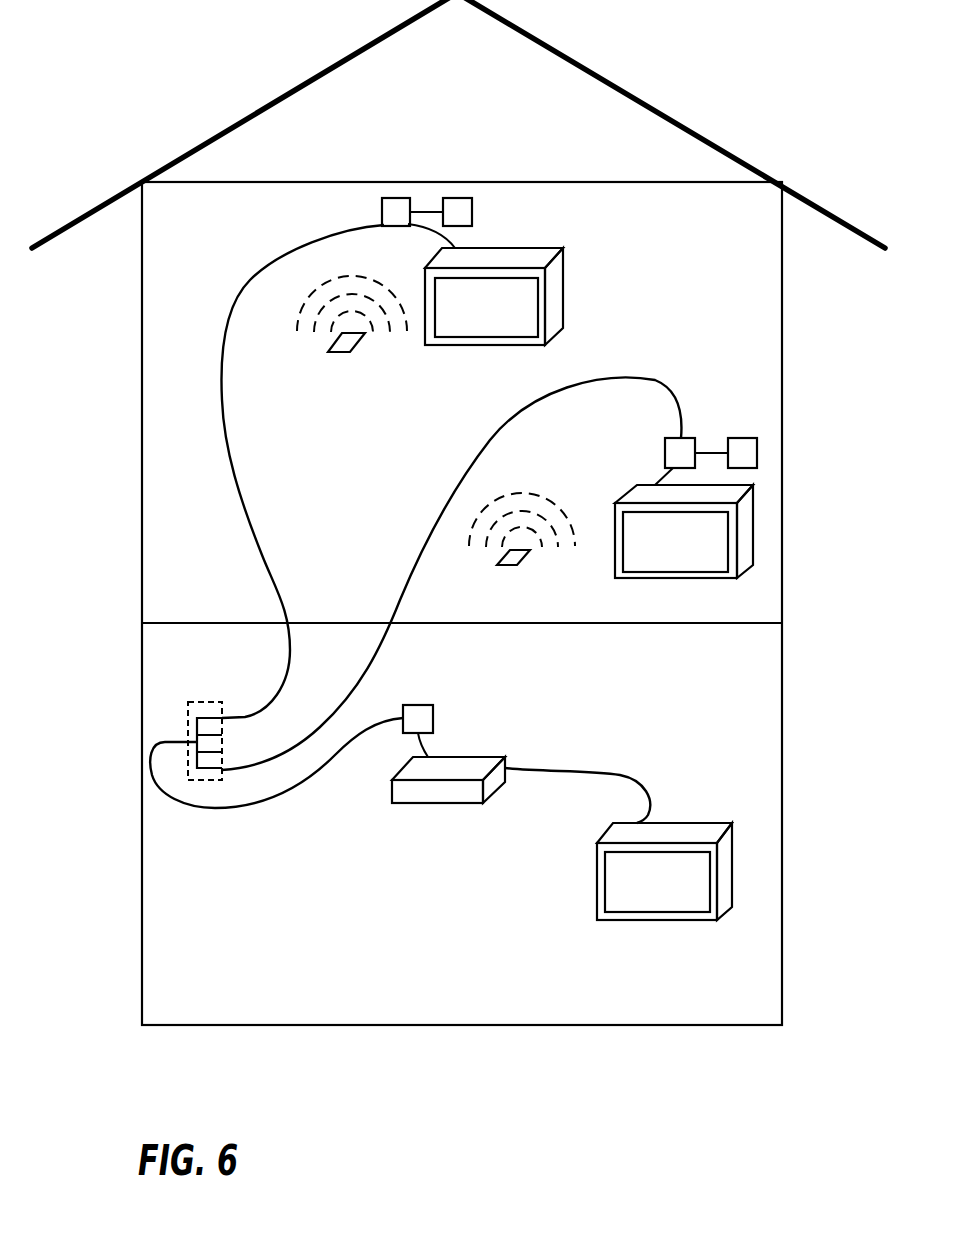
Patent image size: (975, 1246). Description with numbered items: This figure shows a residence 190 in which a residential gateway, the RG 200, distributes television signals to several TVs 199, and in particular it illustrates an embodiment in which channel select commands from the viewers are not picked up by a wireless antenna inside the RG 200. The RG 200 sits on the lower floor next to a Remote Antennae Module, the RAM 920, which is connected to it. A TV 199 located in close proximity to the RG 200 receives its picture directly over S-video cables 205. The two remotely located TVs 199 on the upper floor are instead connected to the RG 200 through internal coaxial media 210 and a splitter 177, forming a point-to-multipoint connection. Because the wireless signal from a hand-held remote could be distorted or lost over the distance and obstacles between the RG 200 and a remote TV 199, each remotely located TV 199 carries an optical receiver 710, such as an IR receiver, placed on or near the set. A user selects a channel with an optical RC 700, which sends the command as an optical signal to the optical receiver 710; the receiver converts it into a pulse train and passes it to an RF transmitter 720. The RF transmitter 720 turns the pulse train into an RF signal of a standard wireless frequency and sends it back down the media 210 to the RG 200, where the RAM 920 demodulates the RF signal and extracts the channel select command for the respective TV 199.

The residence 190 is at (623, 1026).
The TV 199 is at (565, 300).
The RF transmitter 720 is at (406, 247).
The optical receiver 710 is at (474, 210).
The optical RC 700 is at (333, 354).
The media 210 is at (270, 564).
The splitter 177 is at (225, 700).
The Remote Antennae Module (RAM) 920 is at (434, 718).
The residential gateway (RG) 200 is at (432, 804).
The S-video cables 205 is at (624, 781).